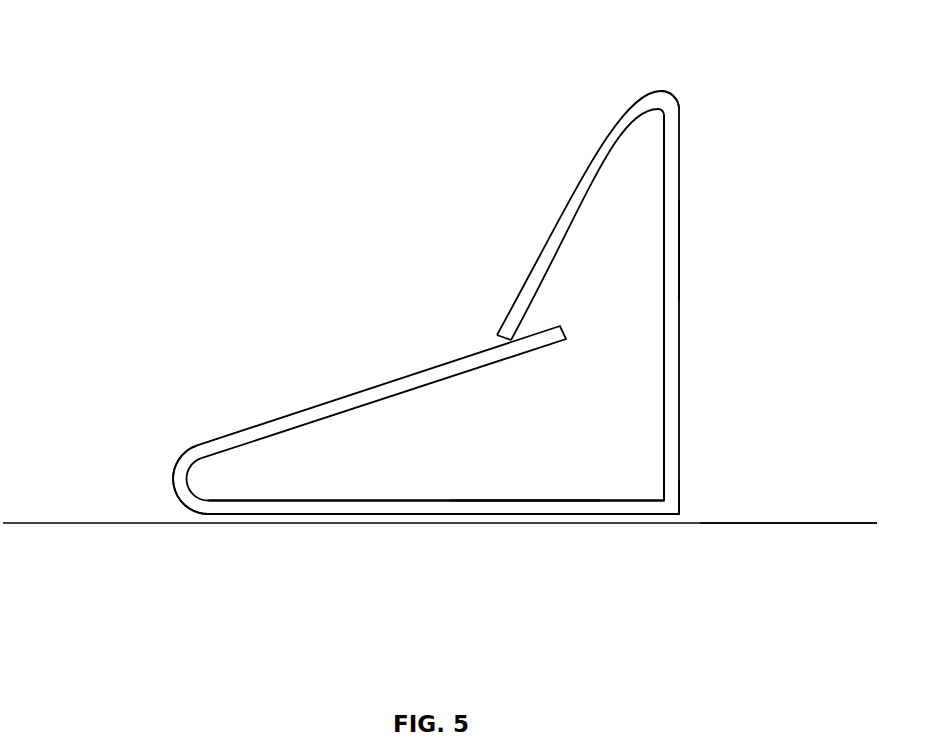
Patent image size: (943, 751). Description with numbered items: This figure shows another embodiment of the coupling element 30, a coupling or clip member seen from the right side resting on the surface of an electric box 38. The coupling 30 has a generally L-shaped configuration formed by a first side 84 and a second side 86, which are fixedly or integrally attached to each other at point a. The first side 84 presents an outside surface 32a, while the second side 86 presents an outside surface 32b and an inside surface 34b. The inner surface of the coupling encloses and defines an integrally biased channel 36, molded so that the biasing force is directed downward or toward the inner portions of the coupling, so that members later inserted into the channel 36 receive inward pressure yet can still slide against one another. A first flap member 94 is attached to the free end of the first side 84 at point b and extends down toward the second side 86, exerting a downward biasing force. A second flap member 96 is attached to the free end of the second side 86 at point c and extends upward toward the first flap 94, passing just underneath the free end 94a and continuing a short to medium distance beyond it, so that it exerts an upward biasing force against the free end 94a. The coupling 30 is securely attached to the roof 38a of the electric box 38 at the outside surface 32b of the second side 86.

The coupling element 30 is at (312, 320).
The first flap member 94 is at (600, 147).
The free end of the first flap 94a is at (485, 320).
The outside surface 32a is at (679, 340).
The outside surface 32b is at (227, 517).
The inside surface 34b is at (250, 500).
The channel 36 is at (397, 465).
The electric box 38 is at (47, 605).
The roof of the electric box 38a is at (757, 524).
The first side 84 is at (708, 257).
The second side 86 is at (525, 475).
The second flap member 96 is at (303, 410).
The point a is at (683, 518).
The point b is at (673, 73).
The point c is at (160, 462).